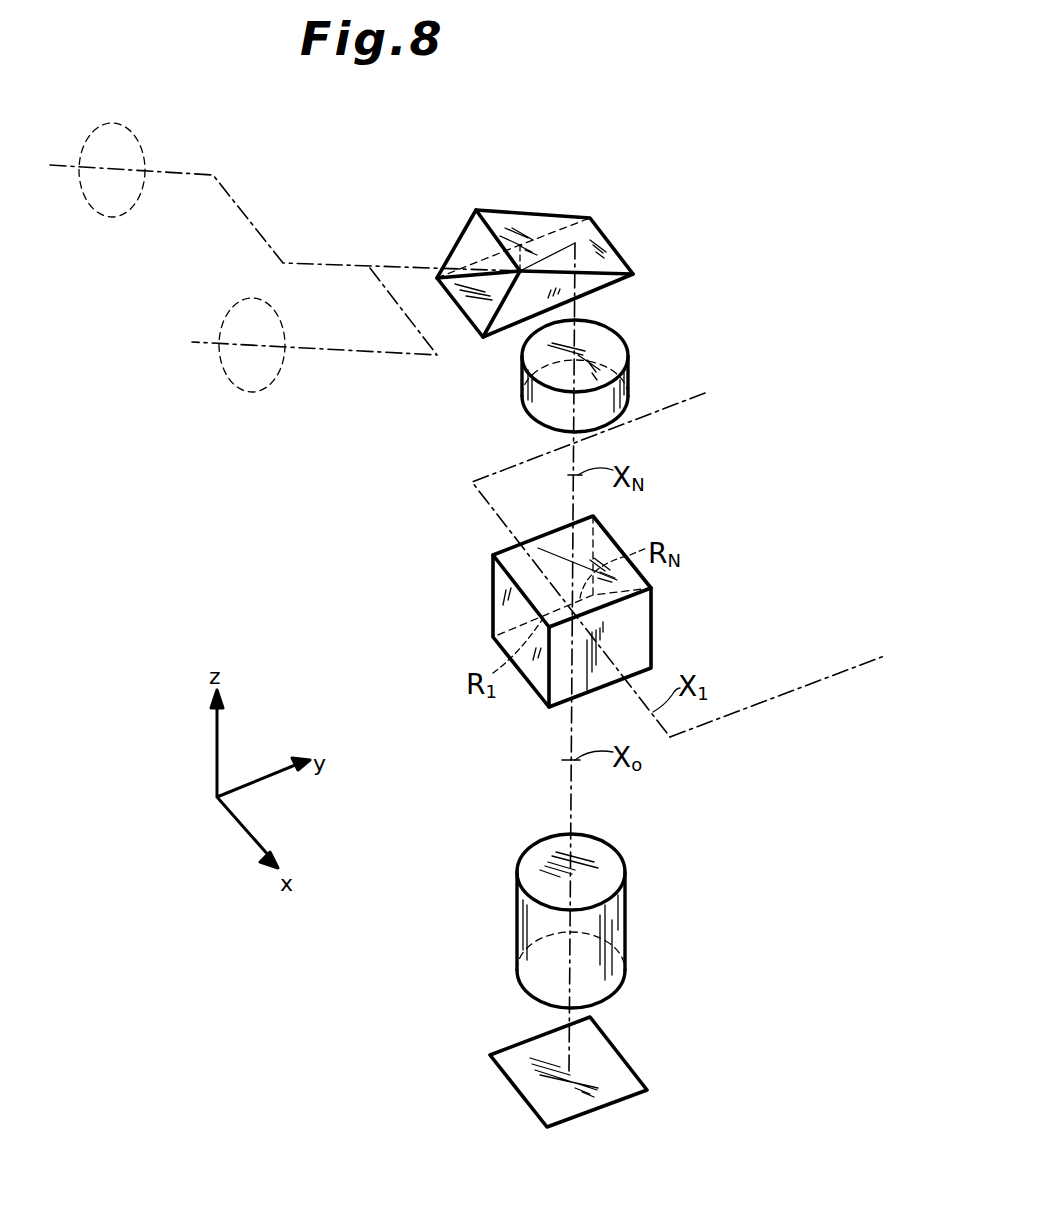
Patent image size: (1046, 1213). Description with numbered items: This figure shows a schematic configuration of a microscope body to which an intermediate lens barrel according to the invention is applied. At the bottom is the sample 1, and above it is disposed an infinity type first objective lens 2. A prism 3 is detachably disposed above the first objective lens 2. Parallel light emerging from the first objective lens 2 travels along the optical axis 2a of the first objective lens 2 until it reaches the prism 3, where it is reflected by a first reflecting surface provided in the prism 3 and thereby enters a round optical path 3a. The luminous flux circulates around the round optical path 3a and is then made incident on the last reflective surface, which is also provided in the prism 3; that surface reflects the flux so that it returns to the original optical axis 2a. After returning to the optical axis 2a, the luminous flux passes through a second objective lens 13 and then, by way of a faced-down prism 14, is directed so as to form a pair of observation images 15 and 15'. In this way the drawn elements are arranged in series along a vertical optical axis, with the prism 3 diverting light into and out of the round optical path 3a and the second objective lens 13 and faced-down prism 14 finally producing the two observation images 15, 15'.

The sample 1 is at (533, 1043).
The first objective lens 2 is at (537, 920).
The optical axis 2a is at (570, 763).
The prism 3 is at (492, 590).
The round optical path 3a is at (770, 702).
The second objective lens 13 is at (522, 390).
The faced-down prism 14 is at (610, 255).
The observation image 15 is at (285, 202).
The observation image 15' is at (314, 364).